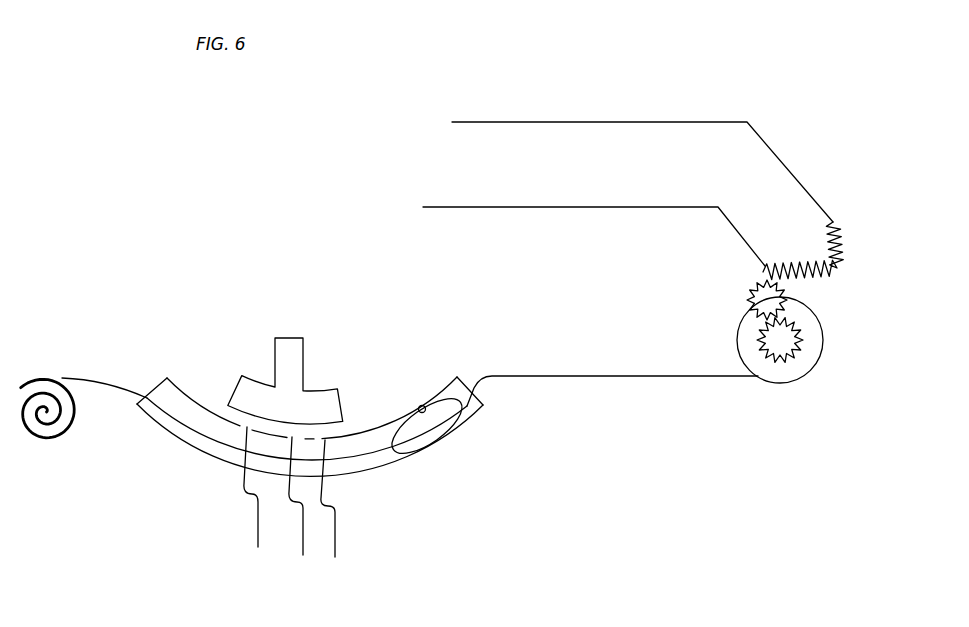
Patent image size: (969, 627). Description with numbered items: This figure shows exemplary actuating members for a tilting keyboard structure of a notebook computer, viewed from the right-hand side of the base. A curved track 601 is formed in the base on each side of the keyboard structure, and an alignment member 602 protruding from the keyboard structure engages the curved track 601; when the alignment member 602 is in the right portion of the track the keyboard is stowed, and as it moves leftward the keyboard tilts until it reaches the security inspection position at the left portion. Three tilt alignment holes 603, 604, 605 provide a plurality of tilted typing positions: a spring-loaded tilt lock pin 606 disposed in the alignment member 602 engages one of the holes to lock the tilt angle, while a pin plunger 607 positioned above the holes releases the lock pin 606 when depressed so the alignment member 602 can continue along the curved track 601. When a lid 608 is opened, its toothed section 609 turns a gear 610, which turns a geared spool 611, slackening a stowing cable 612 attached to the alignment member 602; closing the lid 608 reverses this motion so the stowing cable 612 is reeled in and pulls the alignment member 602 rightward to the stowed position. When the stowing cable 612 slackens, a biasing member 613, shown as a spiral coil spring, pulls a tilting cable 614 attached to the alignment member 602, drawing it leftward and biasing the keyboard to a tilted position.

The curved track 601 is at (353, 478).
The alignment member 602 is at (447, 422).
The tilt alignment hole 603 is at (249, 501).
The tilt alignment hole 604 is at (294, 510).
The tilt alignment hole 605 is at (338, 513).
The tilt lock pin 606 is at (419, 407).
The pin plunger 607 is at (292, 338).
The lid 608 is at (573, 122).
The toothed section 609 is at (828, 272).
The gear 610 is at (760, 285).
The geared spool 611 is at (797, 378).
The stowing cable 612 is at (545, 377).
The biasing member 613 is at (60, 437).
The tilting cable 614 is at (105, 381).